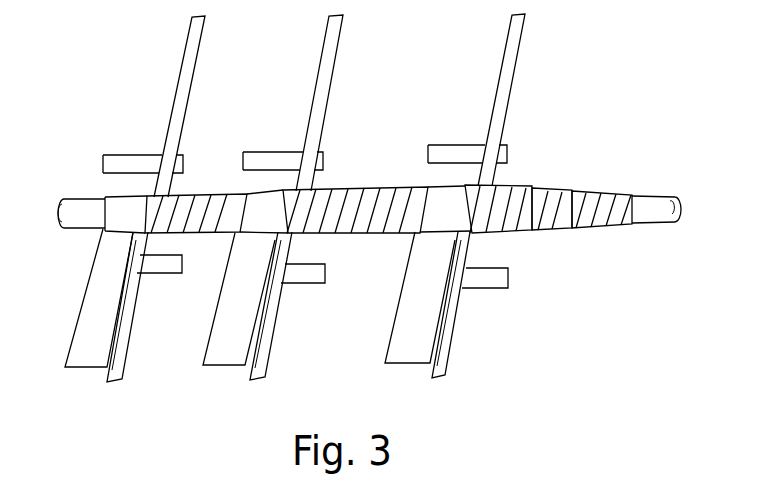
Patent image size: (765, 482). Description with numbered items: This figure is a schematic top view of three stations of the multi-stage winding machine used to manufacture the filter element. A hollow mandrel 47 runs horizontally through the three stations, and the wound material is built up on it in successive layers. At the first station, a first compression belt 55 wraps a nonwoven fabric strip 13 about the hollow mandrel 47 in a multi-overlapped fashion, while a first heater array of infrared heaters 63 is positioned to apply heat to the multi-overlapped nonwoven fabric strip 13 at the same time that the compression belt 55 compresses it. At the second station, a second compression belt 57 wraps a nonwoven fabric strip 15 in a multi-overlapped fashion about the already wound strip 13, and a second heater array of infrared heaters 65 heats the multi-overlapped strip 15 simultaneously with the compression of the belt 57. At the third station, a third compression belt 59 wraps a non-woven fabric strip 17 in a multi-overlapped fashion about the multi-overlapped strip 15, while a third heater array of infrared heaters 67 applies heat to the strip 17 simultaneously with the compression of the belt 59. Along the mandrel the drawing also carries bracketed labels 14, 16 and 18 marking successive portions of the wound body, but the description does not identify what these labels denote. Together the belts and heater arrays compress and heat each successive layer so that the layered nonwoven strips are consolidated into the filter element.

The nonwoven fabric strip 13 is at (95, 330).
The nonwoven fabric strip 15 is at (232, 330).
The non-woven fabric strip 17 is at (415, 327).
The first threaded section of shaft 14 is at (147, 193).
The second threaded section of shaft 16 is at (284, 187).
The third threaded section of shaft 18 is at (468, 234).
The hollow mandrel 47 is at (648, 205).
The first compression belt 55 is at (123, 373).
The second compression belt 57 is at (268, 372).
The third compression belt 59 is at (450, 368).
The infrared heaters 63 is at (122, 163).
The infrared heaters 65 is at (272, 158).
The infrared heaters 67 is at (453, 150).